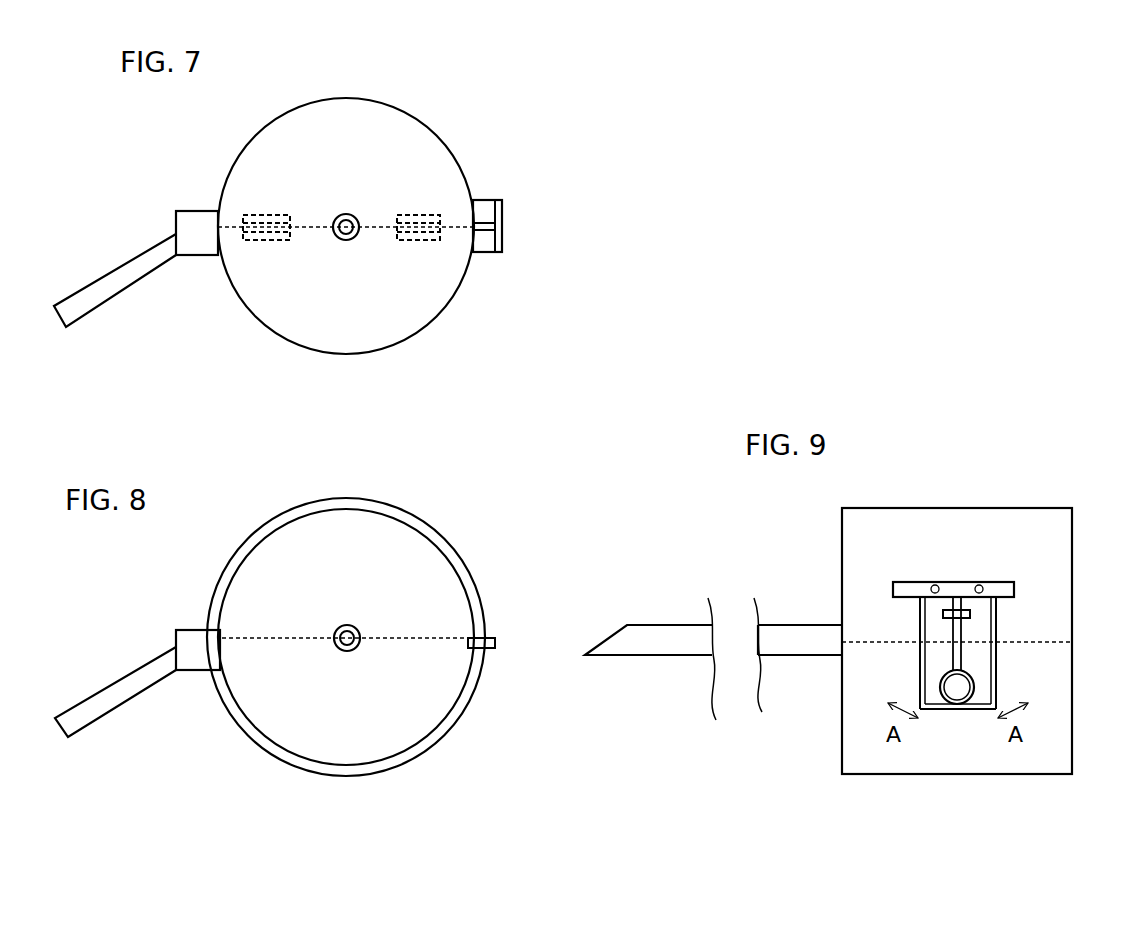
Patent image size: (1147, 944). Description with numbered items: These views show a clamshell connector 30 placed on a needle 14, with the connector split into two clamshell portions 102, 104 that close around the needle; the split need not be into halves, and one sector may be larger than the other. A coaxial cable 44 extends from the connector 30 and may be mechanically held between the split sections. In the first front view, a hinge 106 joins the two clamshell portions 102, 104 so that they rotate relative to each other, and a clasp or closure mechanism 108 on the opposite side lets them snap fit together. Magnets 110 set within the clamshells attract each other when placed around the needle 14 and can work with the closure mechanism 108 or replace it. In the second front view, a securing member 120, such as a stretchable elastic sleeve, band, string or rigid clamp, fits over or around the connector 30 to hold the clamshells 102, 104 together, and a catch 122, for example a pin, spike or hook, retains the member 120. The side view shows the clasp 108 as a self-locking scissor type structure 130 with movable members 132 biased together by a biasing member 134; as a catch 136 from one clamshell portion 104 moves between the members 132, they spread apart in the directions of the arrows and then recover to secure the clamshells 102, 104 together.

In FIG. 7, the needle 14 is at (357, 238).
In FIG. 8, the needle 14 is at (338, 650).
In FIG. 9, the needle 14 is at (668, 650).
In FIG. 7, the connector 30 is at (455, 125).
In FIG. 8, the connector 30 is at (378, 545).
In FIG. 7, the coaxial cable 44 is at (117, 290).
In FIG. 8, the coaxial cable 44 is at (115, 695).
In FIG. 7, the clamshell portion 102 is at (362, 120).
In FIG. 8, the clamshell portion 102 is at (420, 568).
In FIG. 9, the clamshell portion 102 is at (985, 520).
In FIG. 7, the clamshell portion 104 is at (360, 333).
In FIG. 8, the clamshell portion 104 is at (306, 740).
In FIG. 9, the clamshell portion 104 is at (988, 755).
In FIG. 7, the hinge 106 is at (176, 218).
In FIG. 7, the closure mechanism 108 is at (492, 250).
In FIG. 9, the closure mechanism 108 is at (1032, 582).
In FIG. 7, the magnets 110 is at (422, 214).
In FIG. 8, the securing member 120 is at (478, 587).
In FIG. 8, the catch 122 is at (488, 652).
In FIG. 9, the self-locking scissor type structure 130 is at (905, 656).
In FIG. 9, the movable members 132 is at (928, 672).
In FIG. 9, the biasing member 134 is at (955, 582).
In FIG. 9, the catch 136 is at (957, 704).